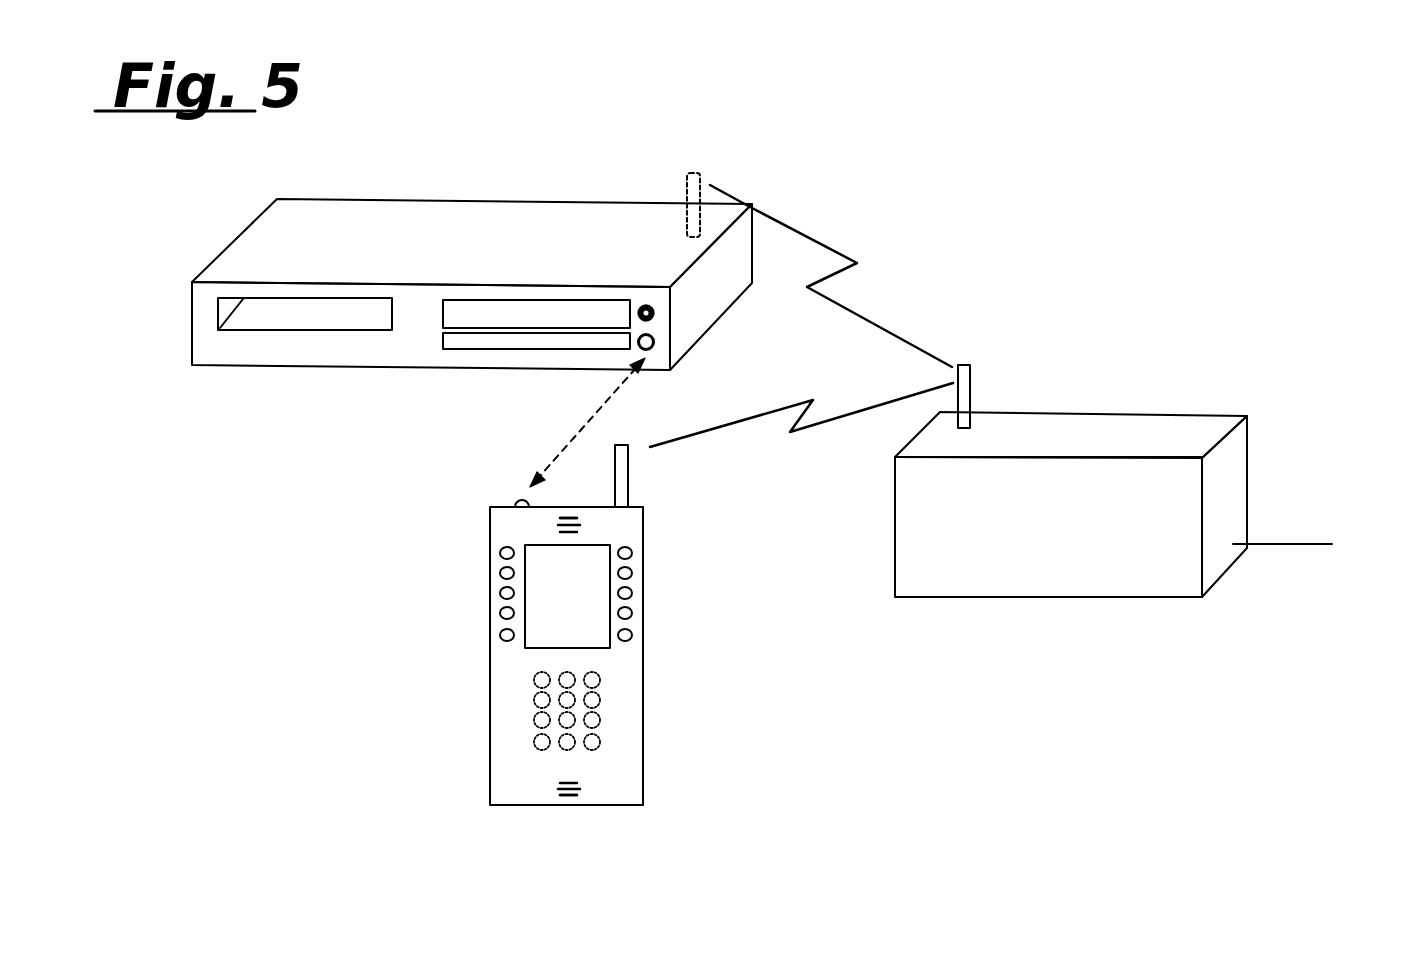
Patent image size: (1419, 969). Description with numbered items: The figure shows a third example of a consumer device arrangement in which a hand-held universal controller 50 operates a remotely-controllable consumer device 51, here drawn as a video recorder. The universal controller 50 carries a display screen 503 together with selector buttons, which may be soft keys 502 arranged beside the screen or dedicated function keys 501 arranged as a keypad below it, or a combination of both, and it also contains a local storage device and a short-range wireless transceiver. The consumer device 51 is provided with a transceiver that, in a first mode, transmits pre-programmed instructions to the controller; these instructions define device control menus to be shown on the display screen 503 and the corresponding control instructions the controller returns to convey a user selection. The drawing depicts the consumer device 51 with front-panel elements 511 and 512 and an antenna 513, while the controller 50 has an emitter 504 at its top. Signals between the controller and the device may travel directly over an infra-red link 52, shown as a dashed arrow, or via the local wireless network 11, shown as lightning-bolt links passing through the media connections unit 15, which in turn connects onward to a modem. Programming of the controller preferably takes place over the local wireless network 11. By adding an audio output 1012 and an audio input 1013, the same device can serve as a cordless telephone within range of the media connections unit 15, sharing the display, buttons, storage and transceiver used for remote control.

The remotely-controllable consumer device 51 is at (255, 262).
The infrared receiver 511 is at (660, 342).
The indicator / control button 512 is at (660, 313).
The antenna of video recorder 513 is at (697, 170).
The local wireless network 11 is at (860, 407).
The infra-red link 52 is at (570, 425).
The media connections unit 15 is at (1157, 428).
The universal controller 50 is at (628, 767).
The dedicated function keys 501 is at (593, 722).
The soft keys 502 is at (633, 577).
The display screen 503 is at (565, 560).
The infrared transmitter 504 is at (505, 497).
The audio output 1012 is at (540, 527).
The audio input 1013 is at (542, 783).